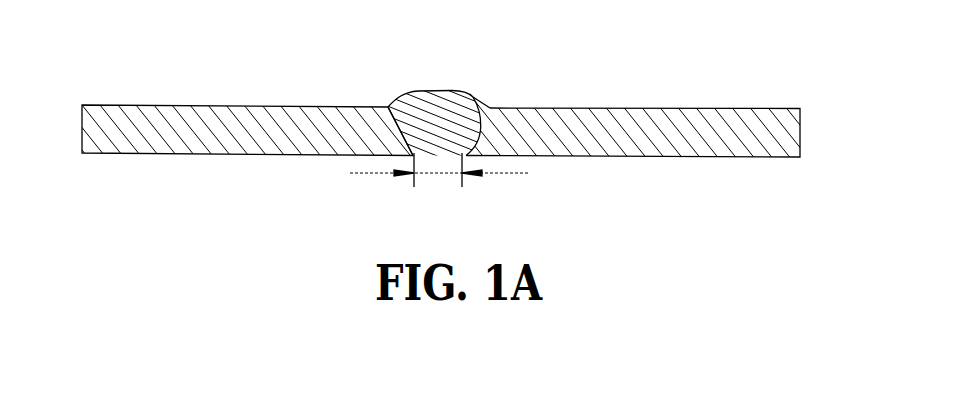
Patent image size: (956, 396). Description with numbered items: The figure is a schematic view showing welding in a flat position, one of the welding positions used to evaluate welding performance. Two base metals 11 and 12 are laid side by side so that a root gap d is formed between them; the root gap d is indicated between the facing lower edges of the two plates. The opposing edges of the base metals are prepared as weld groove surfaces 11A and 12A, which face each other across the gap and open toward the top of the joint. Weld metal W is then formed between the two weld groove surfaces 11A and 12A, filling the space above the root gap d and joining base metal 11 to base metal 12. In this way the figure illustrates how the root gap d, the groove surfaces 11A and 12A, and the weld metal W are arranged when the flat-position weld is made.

The base metal 11 is at (657, 125).
The base metal 12 is at (223, 117).
The weld groove surface 11A is at (474, 106).
The weld groove surface 12A is at (412, 99).
The weld metal W is at (442, 101).
The root gap d is at (440, 177).